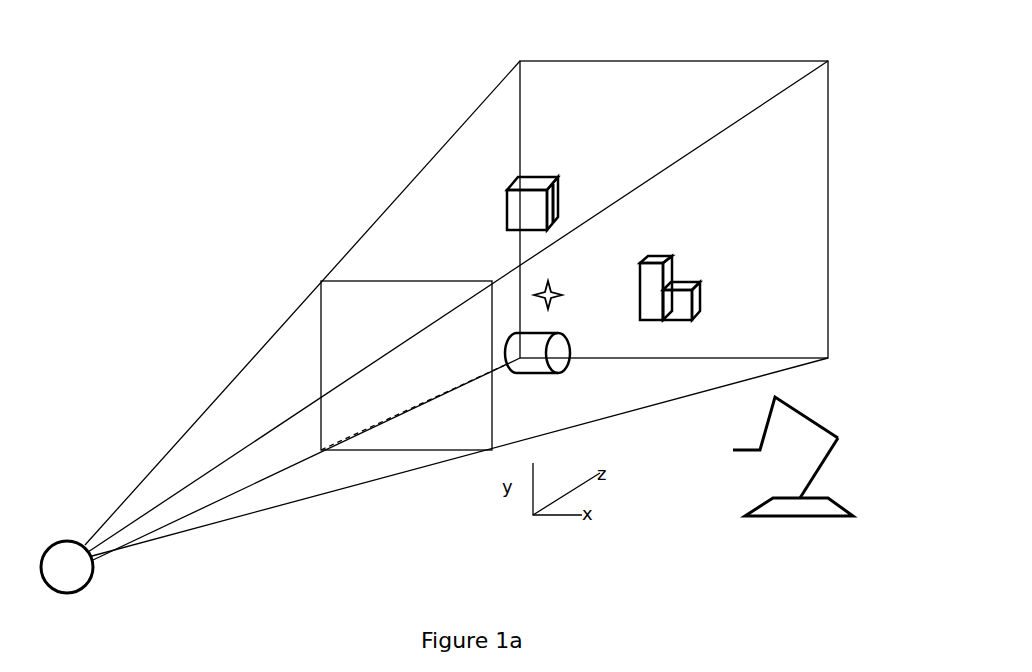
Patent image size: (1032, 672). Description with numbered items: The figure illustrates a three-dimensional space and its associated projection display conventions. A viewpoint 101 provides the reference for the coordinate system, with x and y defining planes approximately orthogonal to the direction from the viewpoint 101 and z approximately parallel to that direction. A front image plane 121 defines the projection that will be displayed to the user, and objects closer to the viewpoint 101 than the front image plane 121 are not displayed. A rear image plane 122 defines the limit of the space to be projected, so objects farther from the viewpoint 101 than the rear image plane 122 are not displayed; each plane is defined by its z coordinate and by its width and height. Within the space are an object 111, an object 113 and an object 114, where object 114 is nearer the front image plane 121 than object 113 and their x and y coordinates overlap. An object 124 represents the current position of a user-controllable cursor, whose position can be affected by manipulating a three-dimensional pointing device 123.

The viewpoint 101 is at (95, 570).
The object 111 is at (424, 181).
The object 113 is at (522, 193).
The object 114 is at (403, 285).
The front image plane 121 is at (318, 343).
The rear image plane 122 is at (593, 186).
The three-dimensional pointing device 123 is at (826, 449).
The object representing the cursor 124 is at (717, 235).